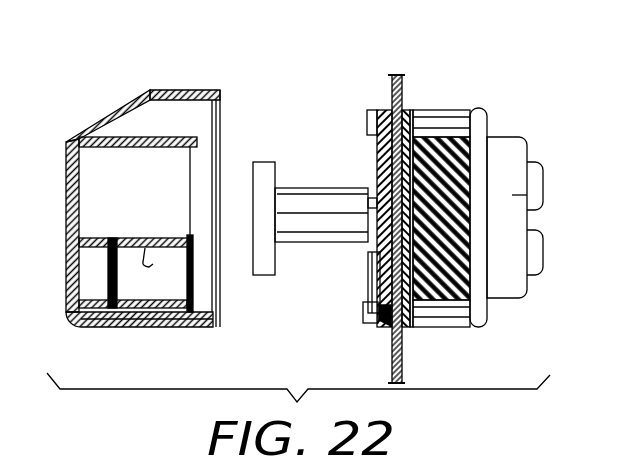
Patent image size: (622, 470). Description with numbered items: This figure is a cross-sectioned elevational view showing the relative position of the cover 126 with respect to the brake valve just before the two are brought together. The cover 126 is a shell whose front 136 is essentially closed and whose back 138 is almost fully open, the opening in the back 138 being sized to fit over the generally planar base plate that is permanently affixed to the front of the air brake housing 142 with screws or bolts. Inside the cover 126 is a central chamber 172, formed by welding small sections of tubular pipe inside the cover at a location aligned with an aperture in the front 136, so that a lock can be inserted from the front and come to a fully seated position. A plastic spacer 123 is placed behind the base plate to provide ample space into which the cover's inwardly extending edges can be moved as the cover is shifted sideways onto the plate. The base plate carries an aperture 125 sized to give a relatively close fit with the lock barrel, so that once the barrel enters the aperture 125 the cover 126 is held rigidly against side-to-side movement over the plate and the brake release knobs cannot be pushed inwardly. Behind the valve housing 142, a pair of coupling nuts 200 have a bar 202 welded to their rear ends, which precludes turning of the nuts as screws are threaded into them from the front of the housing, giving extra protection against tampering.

The cover 126 is at (176, 77).
The front of the cover 136 is at (67, 167).
The back of the cover 138 is at (222, 140).
The central chamber 172 is at (155, 238).
The plastic spacer 123 is at (387, 112).
The coupling nuts 200 is at (440, 123).
The bar 202 is at (477, 127).
The air brake housing 142 is at (547, 170).
The aperture 125 is at (368, 289).